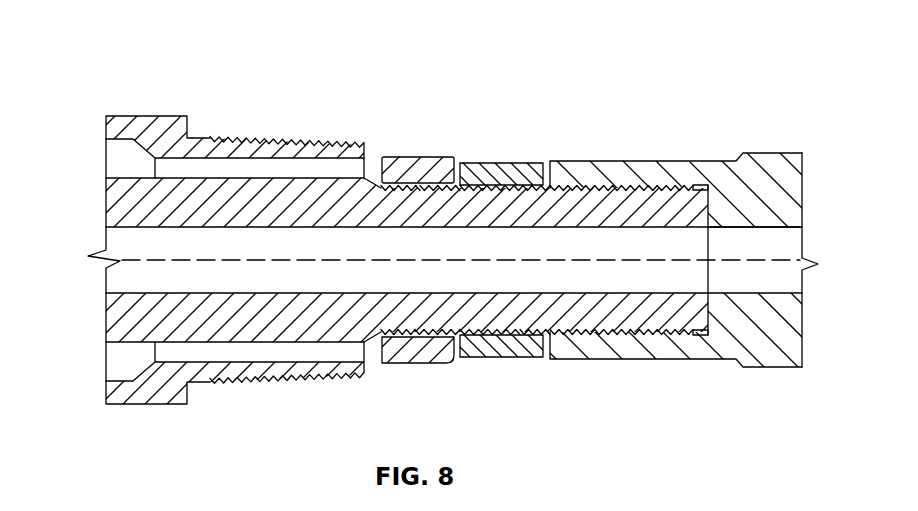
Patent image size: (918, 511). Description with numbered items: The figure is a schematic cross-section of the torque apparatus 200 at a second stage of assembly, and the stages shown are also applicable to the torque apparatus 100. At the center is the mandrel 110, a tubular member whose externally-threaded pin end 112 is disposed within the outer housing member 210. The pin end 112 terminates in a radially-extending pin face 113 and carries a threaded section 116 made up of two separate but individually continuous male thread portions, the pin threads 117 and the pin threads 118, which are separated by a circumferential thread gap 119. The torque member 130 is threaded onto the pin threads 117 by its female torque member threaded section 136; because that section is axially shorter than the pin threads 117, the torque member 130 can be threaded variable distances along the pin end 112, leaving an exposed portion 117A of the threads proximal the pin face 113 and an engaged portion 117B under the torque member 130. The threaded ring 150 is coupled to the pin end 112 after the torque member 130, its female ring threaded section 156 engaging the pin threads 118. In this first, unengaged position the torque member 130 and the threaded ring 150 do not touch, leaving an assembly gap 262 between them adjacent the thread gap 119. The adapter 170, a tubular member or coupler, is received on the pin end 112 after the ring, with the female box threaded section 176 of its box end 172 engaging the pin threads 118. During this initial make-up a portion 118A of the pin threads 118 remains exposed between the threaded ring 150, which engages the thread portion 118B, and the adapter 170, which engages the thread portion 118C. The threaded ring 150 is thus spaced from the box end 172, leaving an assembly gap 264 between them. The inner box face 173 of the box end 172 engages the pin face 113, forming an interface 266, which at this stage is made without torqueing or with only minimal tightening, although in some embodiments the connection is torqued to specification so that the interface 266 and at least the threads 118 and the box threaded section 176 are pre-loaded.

The torque apparatus 100 is at (108, 193).
The mandrel 110 is at (122, 211).
The pin end 112 is at (298, 193).
The pin face 113 is at (710, 203).
The threaded section 116 is at (568, 173).
The pin threads 117 is at (385, 190).
The exposed portion 117A is at (445, 332).
The engaged portion 117B is at (390, 332).
The pin threads 118 is at (507, 190).
The exposed thread portion 118A is at (540, 332).
The thread portion 118B is at (508, 357).
The thread portion 118C is at (633, 332).
The thread gap 119 is at (483, 357).
The torque member 130 is at (412, 157).
The torque member threaded section 136 is at (410, 190).
The threaded ring 150 is at (498, 170).
The ring threaded section 156 is at (498, 168).
The adapter 170 is at (570, 177).
The box end 172 is at (623, 175).
The inner box face 173 is at (706, 218).
The box threaded section 176 is at (665, 185).
The torque apparatus 200 is at (157, 47).
The outer housing member 210 is at (152, 125).
The assembly gap 262 is at (457, 358).
The assembly gap 264 is at (548, 358).
The interface 266 is at (710, 312).